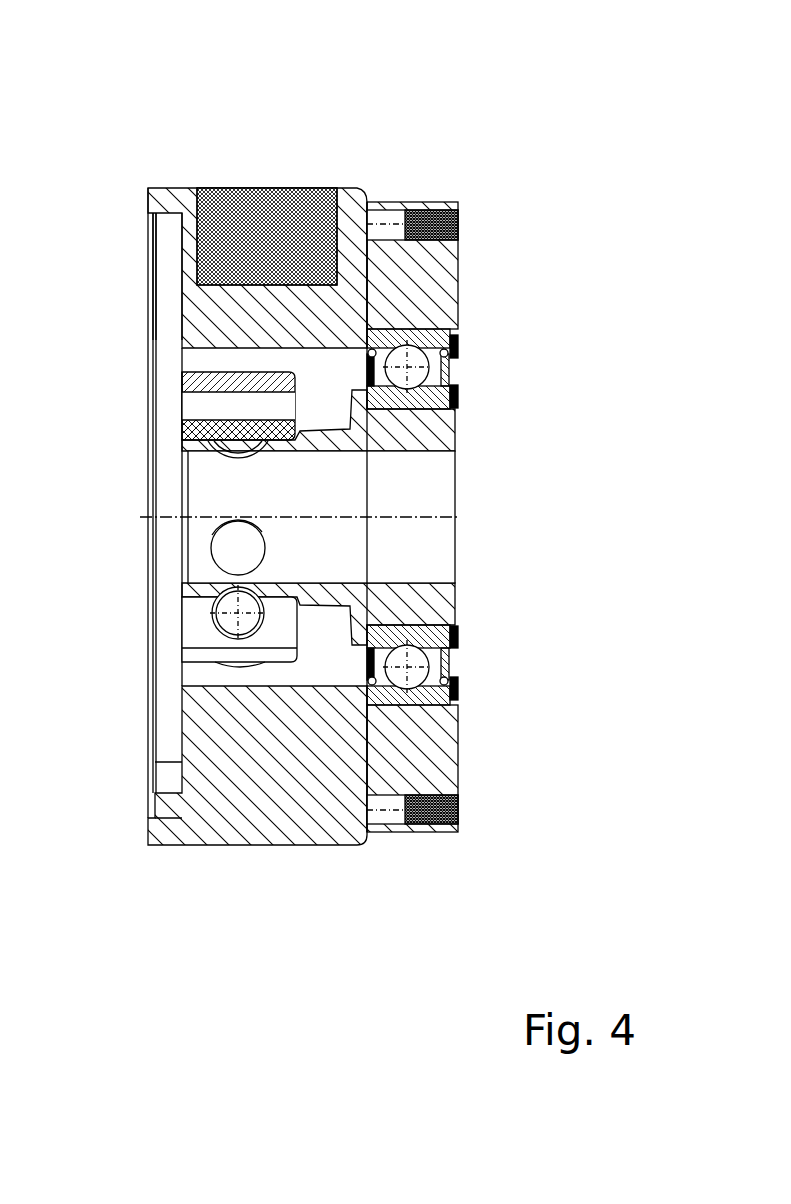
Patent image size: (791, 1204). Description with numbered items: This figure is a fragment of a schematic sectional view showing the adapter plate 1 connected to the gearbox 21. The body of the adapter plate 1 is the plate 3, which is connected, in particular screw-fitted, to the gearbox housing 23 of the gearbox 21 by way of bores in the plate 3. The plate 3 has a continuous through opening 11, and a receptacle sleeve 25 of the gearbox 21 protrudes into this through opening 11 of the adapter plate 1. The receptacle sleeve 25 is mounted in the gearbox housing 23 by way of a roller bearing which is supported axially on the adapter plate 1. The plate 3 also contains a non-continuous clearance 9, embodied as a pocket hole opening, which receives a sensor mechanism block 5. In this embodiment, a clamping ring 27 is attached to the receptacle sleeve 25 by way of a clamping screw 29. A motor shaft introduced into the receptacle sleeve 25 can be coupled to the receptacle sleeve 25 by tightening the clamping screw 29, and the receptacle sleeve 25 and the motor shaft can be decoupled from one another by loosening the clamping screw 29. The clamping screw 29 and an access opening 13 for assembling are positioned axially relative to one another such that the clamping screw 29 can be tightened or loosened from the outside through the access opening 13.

The adapter plate 1 is at (317, 118).
The plate 3 is at (275, 846).
The sensor mechanism block 5 is at (227, 188).
The clearance 9 is at (197, 211).
The through opening 11 is at (183, 340).
The access opening 13 is at (225, 667).
The gearbox 21 is at (418, 118).
The gearbox housing 23 is at (443, 833).
The receptacle sleeve 25 is at (190, 583).
The clamping ring 27 is at (192, 617).
The clamping screw 29 is at (227, 635).